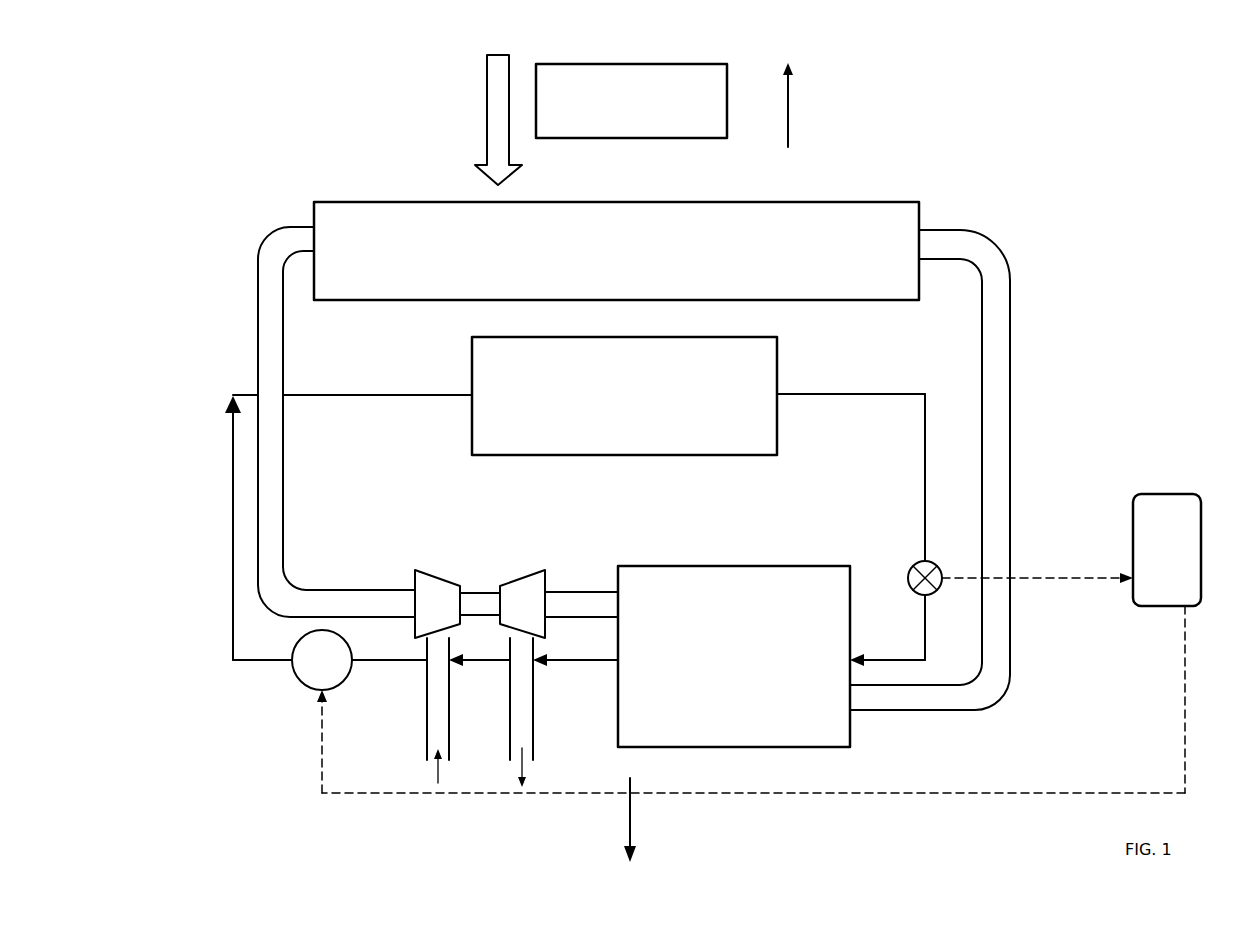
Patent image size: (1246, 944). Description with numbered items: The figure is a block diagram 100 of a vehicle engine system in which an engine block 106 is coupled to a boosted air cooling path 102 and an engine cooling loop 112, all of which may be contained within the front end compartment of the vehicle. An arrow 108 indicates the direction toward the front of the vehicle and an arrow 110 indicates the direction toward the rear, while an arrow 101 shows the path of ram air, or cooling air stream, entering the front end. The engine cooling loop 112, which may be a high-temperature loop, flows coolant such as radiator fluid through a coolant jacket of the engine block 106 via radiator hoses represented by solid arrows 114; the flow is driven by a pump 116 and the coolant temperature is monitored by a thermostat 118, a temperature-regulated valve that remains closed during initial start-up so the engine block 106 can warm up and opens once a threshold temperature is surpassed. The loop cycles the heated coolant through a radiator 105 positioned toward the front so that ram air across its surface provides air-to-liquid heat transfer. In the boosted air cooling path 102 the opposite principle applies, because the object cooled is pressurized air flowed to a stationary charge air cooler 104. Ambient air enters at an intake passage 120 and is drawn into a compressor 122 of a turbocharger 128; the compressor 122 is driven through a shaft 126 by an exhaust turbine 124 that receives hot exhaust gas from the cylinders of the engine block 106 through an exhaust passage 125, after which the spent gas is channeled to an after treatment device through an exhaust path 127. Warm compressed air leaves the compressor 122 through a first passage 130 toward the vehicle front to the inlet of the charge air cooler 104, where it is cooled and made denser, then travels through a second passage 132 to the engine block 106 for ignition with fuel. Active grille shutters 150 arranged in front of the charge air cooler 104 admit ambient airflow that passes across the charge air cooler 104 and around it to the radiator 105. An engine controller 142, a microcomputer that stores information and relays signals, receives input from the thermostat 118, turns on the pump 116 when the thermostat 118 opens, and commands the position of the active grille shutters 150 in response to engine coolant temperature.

The block diagram 100 is at (220, 132).
The ram air flow arrow 101 is at (487, 92).
The boosted air cooling path 102 is at (233, 292).
The charge air cooler 104 is at (602, 260).
The radiator 105 is at (610, 404).
The engine block 106 is at (718, 664).
The arrow toward vehicle front 108 is at (788, 100).
The arrow toward vehicle rear 110 is at (635, 800).
The engine cooling loop 112 is at (198, 565).
The solid arrows representing radiator hoses 114 is at (232, 432).
The pump 116 is at (307, 669).
The thermostat 118 is at (912, 565).
The intake passage 120 is at (436, 700).
The compressor 122 is at (422, 612).
The exhaust turbine 124 is at (508, 612).
The exhaust passage 125 is at (565, 612).
The shaft 126 is at (484, 605).
The exhaust path 127 is at (515, 693).
The turbocharger 128 is at (493, 578).
The first passage 130 is at (270, 447).
The second passage 132 is at (990, 398).
The engine controller 142 is at (1152, 556).
The active grille shutters 150 is at (616, 109).